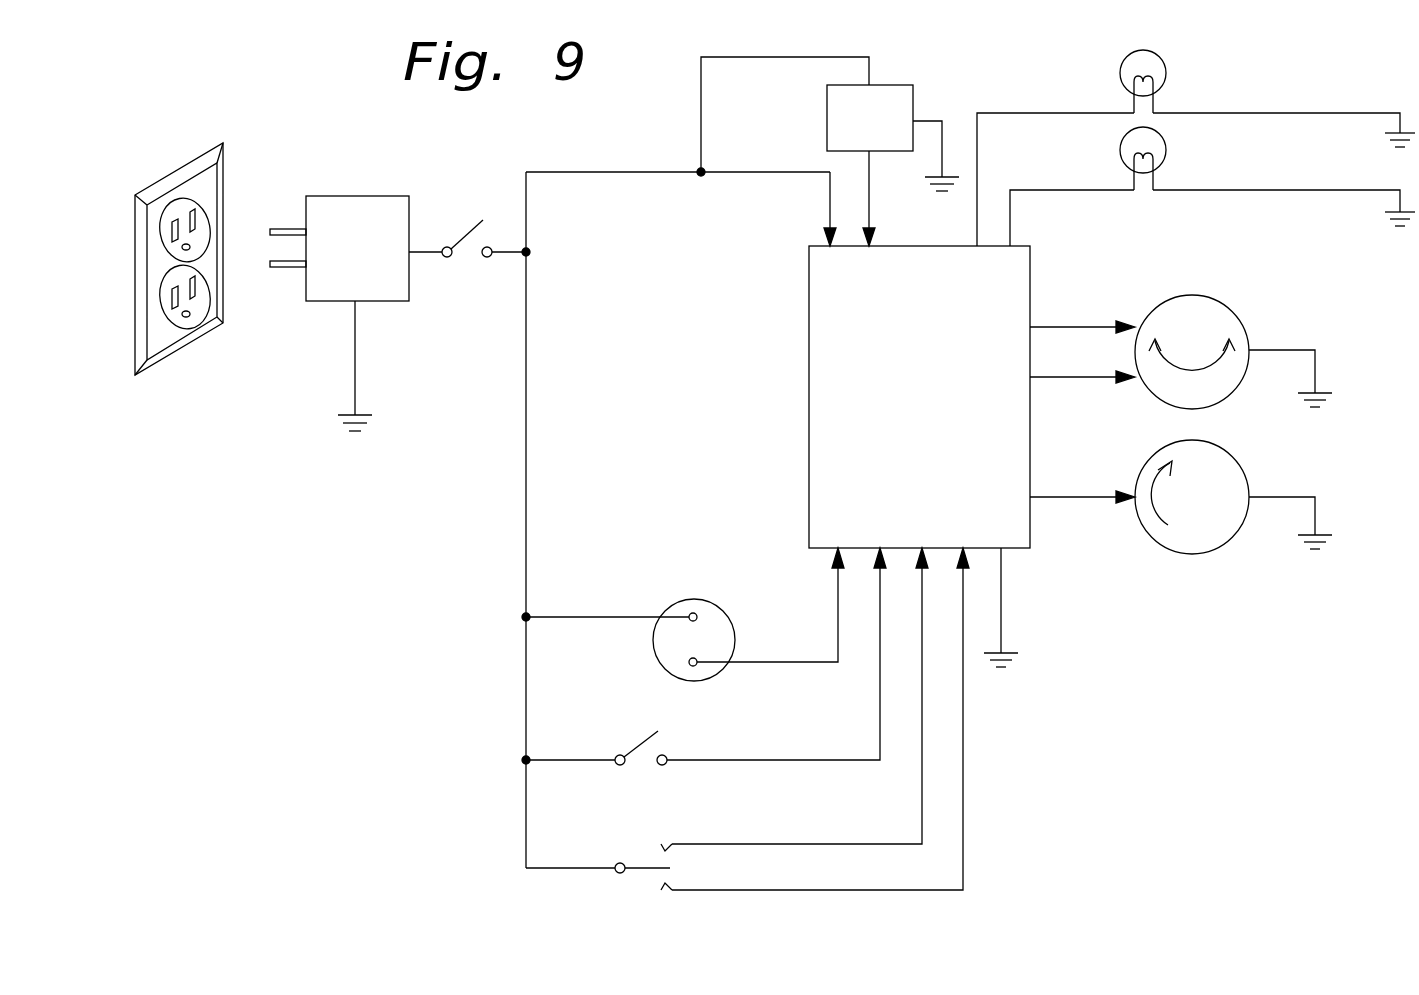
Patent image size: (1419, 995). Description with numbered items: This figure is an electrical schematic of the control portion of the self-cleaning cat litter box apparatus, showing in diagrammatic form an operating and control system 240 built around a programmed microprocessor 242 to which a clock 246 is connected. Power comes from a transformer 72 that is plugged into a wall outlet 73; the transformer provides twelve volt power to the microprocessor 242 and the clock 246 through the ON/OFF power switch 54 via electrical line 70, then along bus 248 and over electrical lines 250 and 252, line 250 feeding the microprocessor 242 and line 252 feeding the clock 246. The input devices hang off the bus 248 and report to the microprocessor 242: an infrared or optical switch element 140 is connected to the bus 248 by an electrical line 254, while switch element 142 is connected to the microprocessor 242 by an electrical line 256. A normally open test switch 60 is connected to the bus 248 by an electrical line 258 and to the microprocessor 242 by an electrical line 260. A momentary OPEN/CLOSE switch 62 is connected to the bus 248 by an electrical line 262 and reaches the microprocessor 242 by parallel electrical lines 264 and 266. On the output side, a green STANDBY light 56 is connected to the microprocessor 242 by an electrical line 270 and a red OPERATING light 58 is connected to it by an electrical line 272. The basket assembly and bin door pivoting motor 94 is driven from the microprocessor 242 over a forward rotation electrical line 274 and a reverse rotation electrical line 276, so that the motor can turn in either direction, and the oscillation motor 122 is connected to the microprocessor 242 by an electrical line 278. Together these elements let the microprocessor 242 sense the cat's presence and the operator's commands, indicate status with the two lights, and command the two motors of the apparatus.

The wall outlet 73 is at (225, 178).
The transformer 72 is at (325, 301).
The electrical line 70 is at (425, 253).
The ON/OFF power switch 54 is at (472, 268).
The bus 248 is at (526, 418).
The electrical line 250 is at (578, 172).
The electrical line 252 is at (732, 57).
The clock 246 is at (933, 85).
The programmed microprocessor 242 is at (1038, 546).
The operating and control system 240 is at (494, 540).
The electrical line 254 is at (562, 621).
The infrared or optical switch element 140 is at (692, 612).
The switch element 142 is at (691, 667).
The electrical line 256 is at (783, 661).
The electrical line 258 is at (560, 763).
The normally open test switch 60 is at (663, 766).
The electrical line 260 is at (763, 760).
The electrical line 262 is at (558, 870).
The momentary OPEN/CLOSE switch 62 is at (650, 852).
The electrical line 264 is at (871, 844).
The electrical line 266 is at (715, 890).
The electrical line 272 is at (1015, 118).
The red OPERATING light 58 is at (1165, 68).
The electrical line 270 is at (1058, 192).
The green STANDBY light 56 is at (1165, 143).
The forward rotation electrical line 274 is at (1092, 322).
The reverse rotation electrical line 276 is at (1075, 378).
The basket assembly and bin door pivoting motor 94 is at (1230, 308).
The electrical line 278 is at (1082, 498).
The oscillation motor 122 is at (1227, 540).